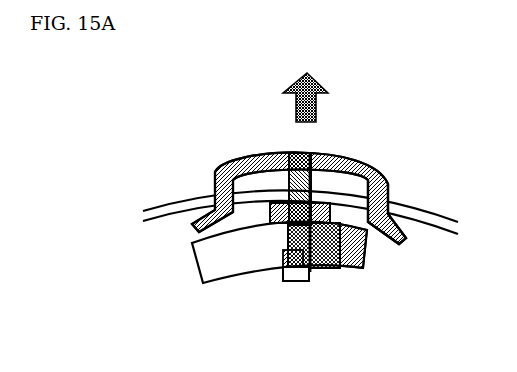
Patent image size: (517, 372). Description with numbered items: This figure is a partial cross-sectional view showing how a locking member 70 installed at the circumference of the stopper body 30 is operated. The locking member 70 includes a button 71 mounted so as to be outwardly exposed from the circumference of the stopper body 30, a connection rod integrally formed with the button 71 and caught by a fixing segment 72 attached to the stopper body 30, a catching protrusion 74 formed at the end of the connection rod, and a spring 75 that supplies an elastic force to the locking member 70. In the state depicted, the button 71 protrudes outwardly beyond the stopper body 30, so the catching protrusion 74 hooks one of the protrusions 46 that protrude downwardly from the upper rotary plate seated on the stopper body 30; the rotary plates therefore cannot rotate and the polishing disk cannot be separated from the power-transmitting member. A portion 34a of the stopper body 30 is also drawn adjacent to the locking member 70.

The stopper body 30 is at (425, 208).
The rib 34a is at (212, 258).
The protrusions 46 is at (324, 268).
The locking member 70 is at (207, 160).
The button 71 is at (367, 163).
The fixing segment 72 is at (262, 203).
The catching protrusion 74 is at (296, 281).
The spring 75 is at (324, 186).